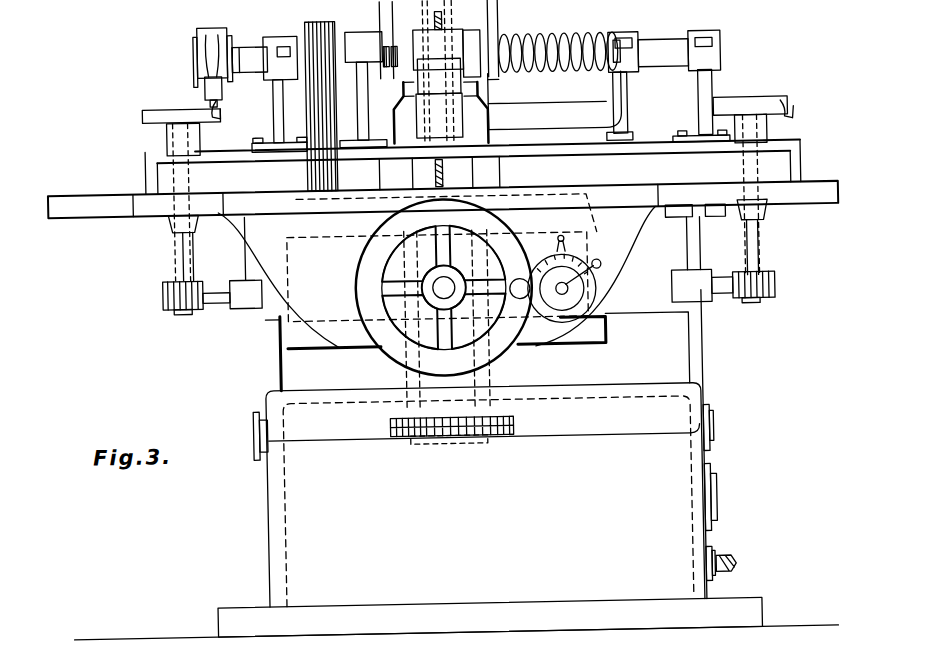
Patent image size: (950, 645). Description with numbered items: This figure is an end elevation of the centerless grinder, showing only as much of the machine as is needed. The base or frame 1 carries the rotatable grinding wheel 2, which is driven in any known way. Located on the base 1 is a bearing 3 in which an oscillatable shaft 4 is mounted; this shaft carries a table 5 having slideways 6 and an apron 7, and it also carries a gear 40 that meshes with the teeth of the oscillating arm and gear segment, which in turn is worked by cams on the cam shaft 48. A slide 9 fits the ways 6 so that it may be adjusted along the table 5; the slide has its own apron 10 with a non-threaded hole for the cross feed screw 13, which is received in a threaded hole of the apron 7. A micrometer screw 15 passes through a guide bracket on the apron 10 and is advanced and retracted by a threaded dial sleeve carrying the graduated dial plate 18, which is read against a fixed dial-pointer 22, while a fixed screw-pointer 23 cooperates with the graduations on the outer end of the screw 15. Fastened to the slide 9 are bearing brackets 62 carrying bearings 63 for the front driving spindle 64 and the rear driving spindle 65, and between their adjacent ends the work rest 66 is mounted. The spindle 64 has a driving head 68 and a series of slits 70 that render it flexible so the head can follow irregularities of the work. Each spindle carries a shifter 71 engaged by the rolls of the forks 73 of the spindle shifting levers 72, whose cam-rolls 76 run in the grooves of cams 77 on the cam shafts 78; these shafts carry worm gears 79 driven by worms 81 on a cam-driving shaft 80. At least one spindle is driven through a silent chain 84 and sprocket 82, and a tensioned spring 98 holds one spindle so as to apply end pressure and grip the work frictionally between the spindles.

The base or frame 1 is at (501, 494).
The grinding wheel 2 is at (450, 18).
The bearing 3 is at (480, 381).
The oscillatable shaft 4 is at (410, 368).
The table 5 is at (608, 236).
The slideways 6 is at (592, 190).
The apron 7 is at (285, 348).
The slide 9 is at (115, 213).
The apron 10 is at (316, 284).
The cross feed screw 13 is at (436, 288).
The micrometer screw 15 is at (603, 344).
The dial plate 18 is at (566, 325).
The dial-pointer 22 is at (566, 246).
The screw-pointer 23 is at (600, 281).
The gear 40 is at (440, 444).
The cam shaft 48 is at (256, 450).
The bearing brackets 62 is at (270, 34).
The bearings 63 is at (288, 33).
The front driving spindle 64 is at (258, 66).
The rear driving spindle 65 is at (665, 70).
The work rest 66 is at (470, 118).
The driving head 68 is at (420, 92).
The slits 70 is at (392, 48).
The shifter 71 is at (200, 50).
The spindle shifting levers 72 is at (211, 87).
The forks 73 is at (206, 28).
The cam-rolls 76 is at (219, 116).
The cams 77 is at (148, 112).
The cam shafts 78 is at (183, 250).
The worm gears 79 is at (166, 297).
The cam-driving shaft 80 is at (220, 290).
The worms 81 is at (186, 312).
The sprocket 82 is at (290, 90).
The silent chain 84 is at (306, 158).
The spring 98 is at (566, 36).